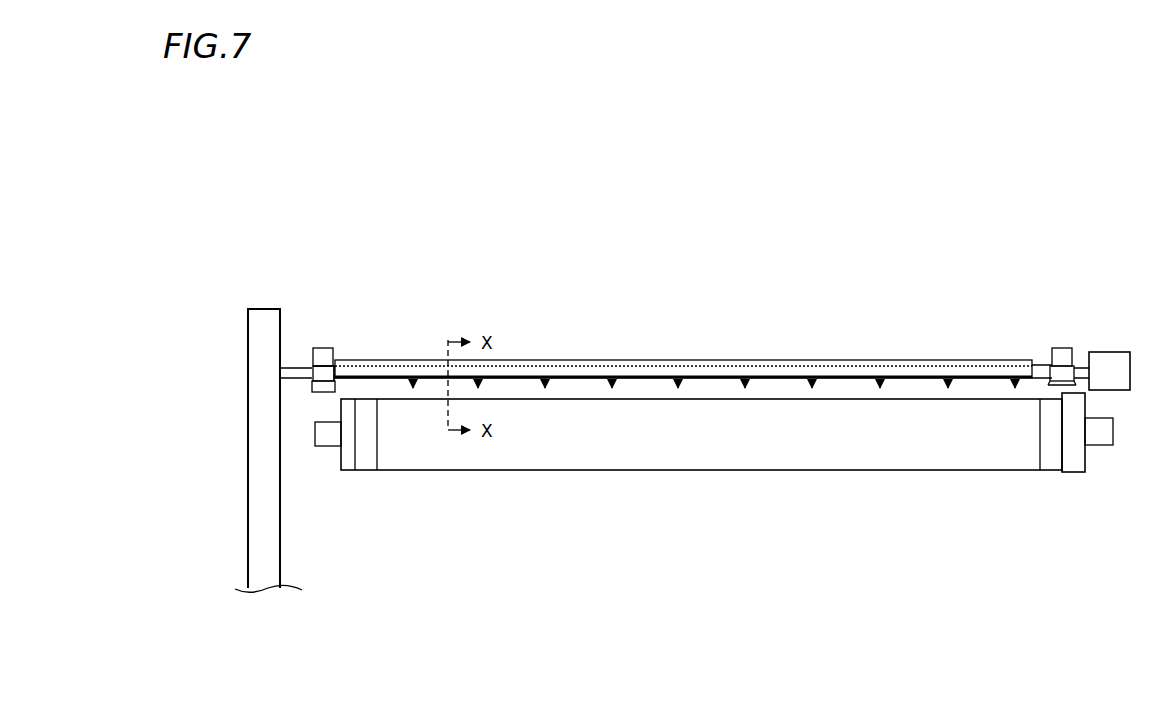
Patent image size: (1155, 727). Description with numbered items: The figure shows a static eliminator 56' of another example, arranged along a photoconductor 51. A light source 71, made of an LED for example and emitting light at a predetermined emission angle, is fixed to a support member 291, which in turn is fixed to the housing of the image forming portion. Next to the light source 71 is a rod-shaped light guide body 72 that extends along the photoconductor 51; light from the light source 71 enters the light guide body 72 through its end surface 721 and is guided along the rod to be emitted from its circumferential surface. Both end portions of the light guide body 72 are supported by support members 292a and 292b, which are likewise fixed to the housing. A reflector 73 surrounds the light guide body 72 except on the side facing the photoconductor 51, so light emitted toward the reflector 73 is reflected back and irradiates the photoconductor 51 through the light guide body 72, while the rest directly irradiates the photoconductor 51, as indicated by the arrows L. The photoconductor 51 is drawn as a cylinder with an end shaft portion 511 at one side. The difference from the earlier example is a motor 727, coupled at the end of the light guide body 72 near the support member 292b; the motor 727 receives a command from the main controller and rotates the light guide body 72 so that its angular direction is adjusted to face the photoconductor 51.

The support member 291 is at (248, 322).
The light source 71 is at (285, 381).
The end surface 721 is at (313, 366).
The support member 292a is at (322, 350).
The light guide body 72 is at (333, 360).
The reflector 73 is at (372, 360).
The light L is at (612, 392).
The static eliminator 56' is at (597, 295).
The photoconductor 51 is at (575, 458).
The roller shaft 511 is at (1098, 433).
The support member 292b is at (1052, 356).
The motor 727 is at (1108, 352).